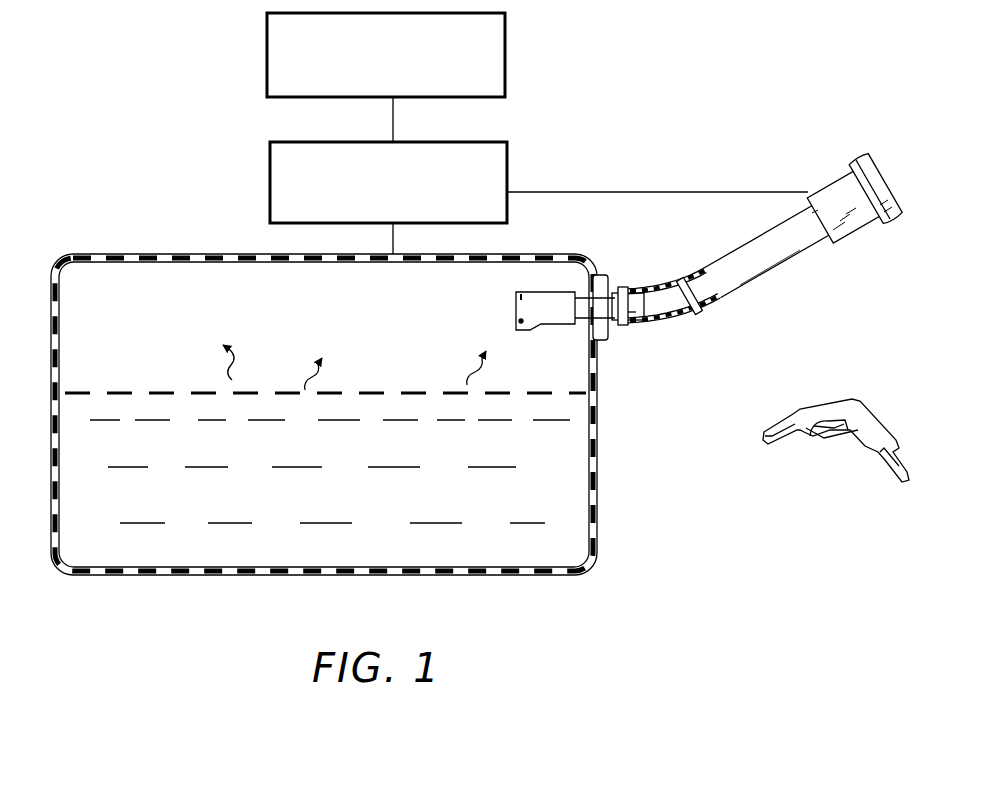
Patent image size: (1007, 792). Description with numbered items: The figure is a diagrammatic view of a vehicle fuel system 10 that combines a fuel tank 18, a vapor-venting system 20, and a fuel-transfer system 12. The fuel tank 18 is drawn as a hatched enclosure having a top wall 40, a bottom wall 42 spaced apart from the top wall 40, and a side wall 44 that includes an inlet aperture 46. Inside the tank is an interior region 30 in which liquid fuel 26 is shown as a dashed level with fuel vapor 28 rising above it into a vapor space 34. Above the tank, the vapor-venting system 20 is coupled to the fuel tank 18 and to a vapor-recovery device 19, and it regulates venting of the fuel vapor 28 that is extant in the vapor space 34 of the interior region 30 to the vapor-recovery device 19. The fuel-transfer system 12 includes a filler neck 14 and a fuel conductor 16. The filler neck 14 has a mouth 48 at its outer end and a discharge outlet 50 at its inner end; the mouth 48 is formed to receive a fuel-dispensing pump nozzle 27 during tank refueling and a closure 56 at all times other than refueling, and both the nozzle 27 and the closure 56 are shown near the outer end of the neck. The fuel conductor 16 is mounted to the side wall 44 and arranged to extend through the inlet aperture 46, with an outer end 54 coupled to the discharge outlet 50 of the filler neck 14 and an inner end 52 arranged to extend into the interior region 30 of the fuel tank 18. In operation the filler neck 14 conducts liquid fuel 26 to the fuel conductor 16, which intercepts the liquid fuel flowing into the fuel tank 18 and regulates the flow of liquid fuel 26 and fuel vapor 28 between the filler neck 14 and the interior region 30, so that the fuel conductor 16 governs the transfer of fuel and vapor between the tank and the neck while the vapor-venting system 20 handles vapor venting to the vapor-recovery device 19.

The fuel system 10 is at (184, 170).
The fuel-transfer system 12 is at (733, 340).
The filler neck 14 is at (754, 301).
The fuel conductor 16 is at (607, 347).
The fuel tank 18 is at (98, 249).
The vapor-recovery device 19 is at (505, 70).
The vapor-venting system 20 is at (488, 140).
The liquid fuel 26 is at (373, 393).
The fuel-dispensing pump nozzle 27 is at (839, 454).
The fuel vapor 28 is at (312, 369).
The interior region 30 is at (246, 341).
The vapor space 34 is at (168, 297).
The top wall 40 is at (523, 253).
The bottom wall 42 is at (529, 582).
The side wall 44 is at (603, 498).
The inlet aperture 46 is at (588, 298).
The mouth 48 is at (858, 237).
The discharge outlet 50 is at (621, 338).
The inner end 52 is at (524, 334).
The outer end 54 is at (631, 280).
The closure 56 is at (860, 149).